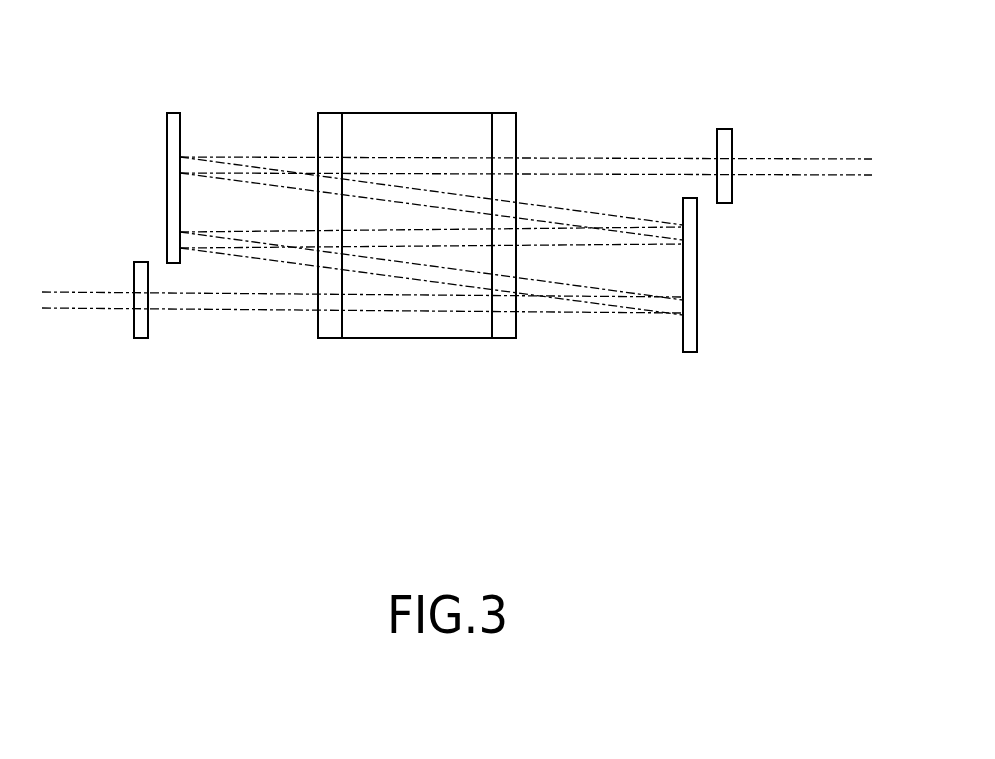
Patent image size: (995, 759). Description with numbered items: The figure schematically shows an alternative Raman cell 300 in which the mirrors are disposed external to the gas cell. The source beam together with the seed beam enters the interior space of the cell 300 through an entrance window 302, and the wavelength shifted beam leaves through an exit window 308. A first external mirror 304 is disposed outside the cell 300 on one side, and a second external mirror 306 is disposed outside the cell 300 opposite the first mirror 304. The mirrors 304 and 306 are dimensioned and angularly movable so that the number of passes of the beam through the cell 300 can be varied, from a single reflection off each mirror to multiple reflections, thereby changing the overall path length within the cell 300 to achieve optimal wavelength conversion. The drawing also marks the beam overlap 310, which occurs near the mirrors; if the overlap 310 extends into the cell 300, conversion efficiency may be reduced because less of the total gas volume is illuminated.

The Raman cell 300 is at (494, 83).
The entrance window 302 is at (148, 320).
The first external mirror 304 is at (697, 258).
The second external mirror 306 is at (167, 143).
The exit window 308 is at (508, 138).
The beam overlap 310 is at (263, 203).